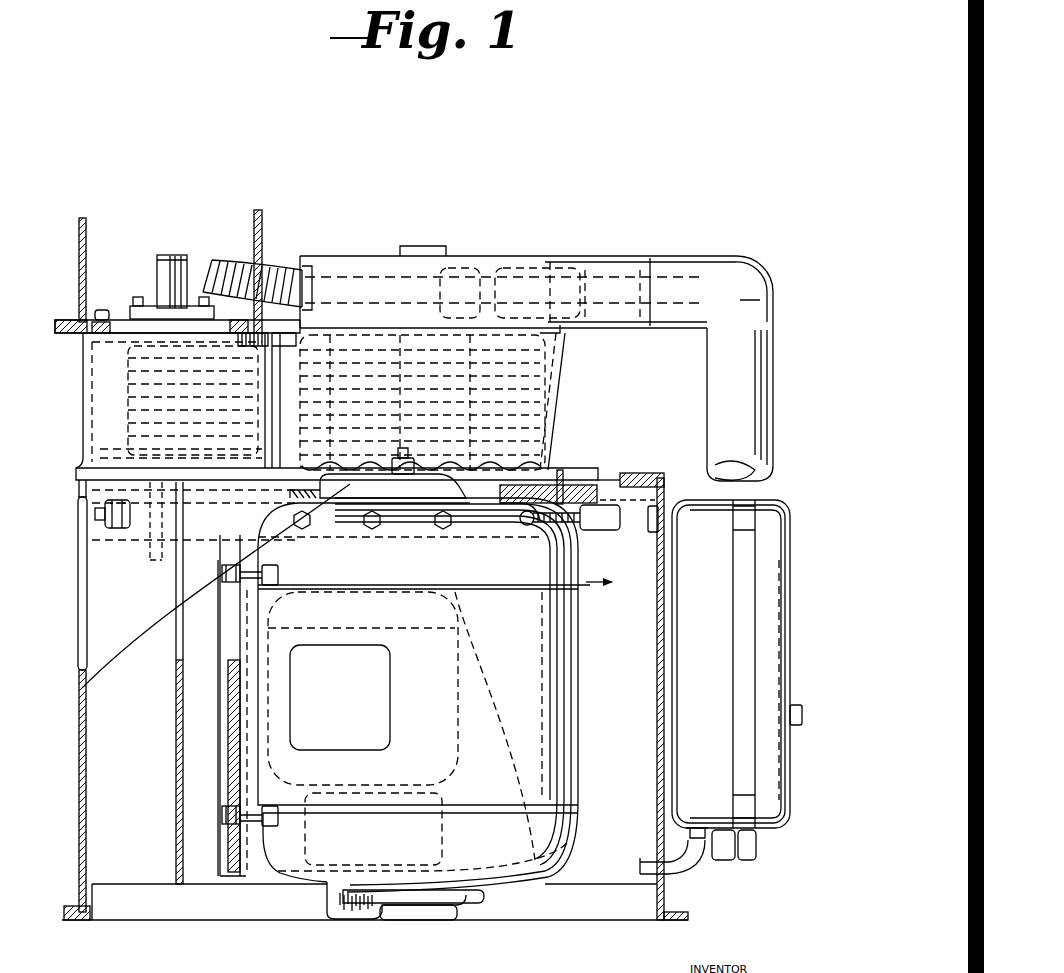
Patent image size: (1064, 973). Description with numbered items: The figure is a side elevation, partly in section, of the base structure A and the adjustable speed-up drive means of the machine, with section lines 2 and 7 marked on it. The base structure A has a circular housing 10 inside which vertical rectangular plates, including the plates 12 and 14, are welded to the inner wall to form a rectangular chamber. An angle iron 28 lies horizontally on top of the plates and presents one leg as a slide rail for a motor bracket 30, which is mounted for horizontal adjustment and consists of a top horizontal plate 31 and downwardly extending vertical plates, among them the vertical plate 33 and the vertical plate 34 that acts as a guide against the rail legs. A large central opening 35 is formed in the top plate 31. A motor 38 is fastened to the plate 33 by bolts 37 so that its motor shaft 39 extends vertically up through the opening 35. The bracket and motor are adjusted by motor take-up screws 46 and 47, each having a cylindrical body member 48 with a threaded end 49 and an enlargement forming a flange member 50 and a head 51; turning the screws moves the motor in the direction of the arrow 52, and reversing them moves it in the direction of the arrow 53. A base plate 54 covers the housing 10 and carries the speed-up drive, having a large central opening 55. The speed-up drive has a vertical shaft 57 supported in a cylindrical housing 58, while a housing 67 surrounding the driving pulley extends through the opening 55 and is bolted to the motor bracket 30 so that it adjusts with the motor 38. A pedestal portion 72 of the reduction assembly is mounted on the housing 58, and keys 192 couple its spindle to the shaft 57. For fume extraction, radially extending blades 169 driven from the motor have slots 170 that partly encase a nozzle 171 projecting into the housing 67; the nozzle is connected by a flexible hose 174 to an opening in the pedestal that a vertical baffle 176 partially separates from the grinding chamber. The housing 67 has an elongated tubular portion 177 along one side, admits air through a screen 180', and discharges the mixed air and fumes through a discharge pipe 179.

The circular housing 10 is at (80, 785).
The rectangular plate 12 is at (176, 690).
The rectangular plate 14 is at (657, 580).
The angle iron 28 is at (412, 532).
The motor bracket 30 is at (572, 849).
The top horizontal plate 31 is at (590, 485).
The vertical plate 33 is at (222, 712).
The vertical plate 34 is at (222, 658).
The central opening 35 is at (490, 492).
The bolts 37 is at (222, 580).
The motor 38 is at (522, 639).
The motor shaft 39 is at (398, 502).
The motor take-up screw 46 is at (95, 522).
The motor take-up screw 47 is at (655, 532).
The cylindrical body member 48 is at (118, 537).
The threaded end 49 is at (160, 515).
The flange member 50 is at (105, 525).
The head 51 is at (78, 502).
The arrow 52 is at (96, 548).
The arrow 53 is at (590, 584).
The base plate 54 is at (650, 476).
The central opening 55 is at (565, 484).
The vertical shaft 57 is at (158, 296).
The cylindrical housing 58 is at (83, 398).
The housing 67 is at (556, 420).
The pedestal portion 72 is at (78, 268).
The radially extending blades 169 is at (545, 270).
The slots 170 is at (556, 327).
The nozzle 171 is at (485, 268).
The flexible hose 174 is at (248, 268).
The vertical baffle 176 is at (598, 258).
The elongated tubular portion 177 is at (650, 258).
The discharge pipe 179 is at (772, 338).
The screen 180' is at (427, 236).
The keys 192 is at (166, 262).
The base structure A is at (230, 916).
The section line 2- 2 is at (78, 476).
The section line 7- 7 is at (312, 240).